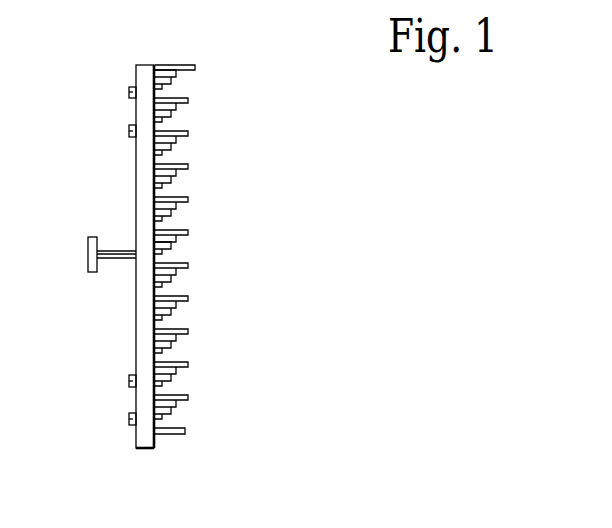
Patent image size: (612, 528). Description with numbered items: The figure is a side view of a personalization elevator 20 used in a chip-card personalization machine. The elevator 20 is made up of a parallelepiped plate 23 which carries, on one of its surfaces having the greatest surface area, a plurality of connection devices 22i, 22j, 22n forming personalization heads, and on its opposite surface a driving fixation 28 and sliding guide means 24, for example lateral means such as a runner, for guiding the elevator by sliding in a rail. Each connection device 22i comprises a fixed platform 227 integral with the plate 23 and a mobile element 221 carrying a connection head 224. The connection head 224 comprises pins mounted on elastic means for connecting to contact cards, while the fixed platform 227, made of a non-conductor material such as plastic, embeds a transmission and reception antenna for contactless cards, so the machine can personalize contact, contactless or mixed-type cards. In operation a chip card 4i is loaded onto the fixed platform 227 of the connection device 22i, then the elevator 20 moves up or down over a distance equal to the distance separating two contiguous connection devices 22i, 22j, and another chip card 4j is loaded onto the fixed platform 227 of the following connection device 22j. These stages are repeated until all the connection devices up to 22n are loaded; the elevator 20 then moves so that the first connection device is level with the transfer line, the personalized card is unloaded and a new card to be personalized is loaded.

The personalization elevator 20 is at (200, 473).
The connection device 22i is at (186, 68).
The connection device 22j is at (172, 108).
The connection device 22n is at (186, 431).
The chip card 4i is at (172, 94).
The chip card 4j is at (185, 131).
The mobile element 221 is at (168, 247).
The connection head 224 is at (170, 238).
The fixed platform 227 is at (186, 264).
The parallelepiped plate 23 is at (137, 438).
The sliding guide means 24 is at (128, 130).
The driving fixation 28 is at (92, 253).